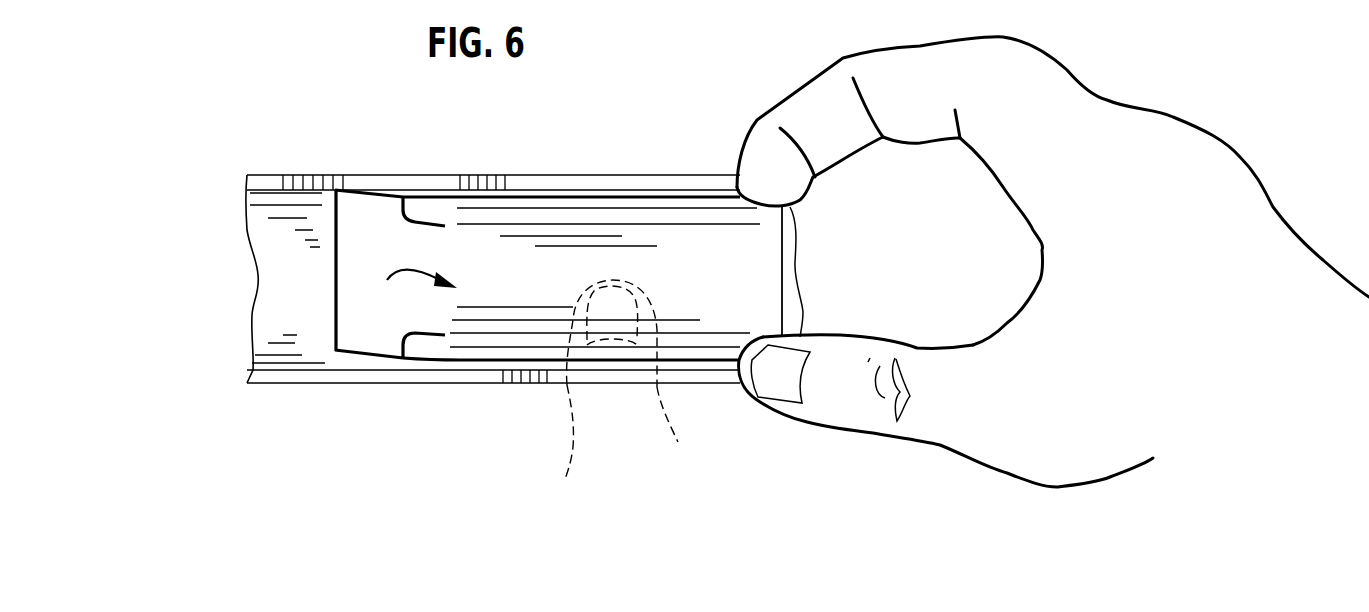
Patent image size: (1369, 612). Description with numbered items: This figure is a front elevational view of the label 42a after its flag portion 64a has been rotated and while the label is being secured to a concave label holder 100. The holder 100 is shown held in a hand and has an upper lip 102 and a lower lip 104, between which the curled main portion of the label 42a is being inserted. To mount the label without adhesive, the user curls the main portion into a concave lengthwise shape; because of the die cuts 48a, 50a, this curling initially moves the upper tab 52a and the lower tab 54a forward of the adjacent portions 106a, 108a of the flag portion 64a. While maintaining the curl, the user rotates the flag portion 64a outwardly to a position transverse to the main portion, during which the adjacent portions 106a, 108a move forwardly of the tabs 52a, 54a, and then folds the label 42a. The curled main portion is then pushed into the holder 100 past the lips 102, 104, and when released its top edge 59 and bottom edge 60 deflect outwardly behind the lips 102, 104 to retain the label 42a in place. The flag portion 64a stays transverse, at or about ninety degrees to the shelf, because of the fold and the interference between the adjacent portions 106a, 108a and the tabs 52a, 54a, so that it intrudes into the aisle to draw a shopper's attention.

The label holder 100 is at (215, 190).
The upper lip 102 is at (547, 182).
The lower lip 104 is at (707, 377).
The top edge 59 is at (647, 196).
The bottom edge 60 is at (740, 397).
The adjacent portion 106a is at (408, 205).
The adjacent portion 108a is at (400, 338).
The die cut 50a is at (402, 196).
The die cut 48a is at (411, 341).
The upper tab 52a is at (425, 210).
The lower tab 54a is at (427, 342).
The flag portion 64a is at (337, 277).
The label 42a is at (765, 281).